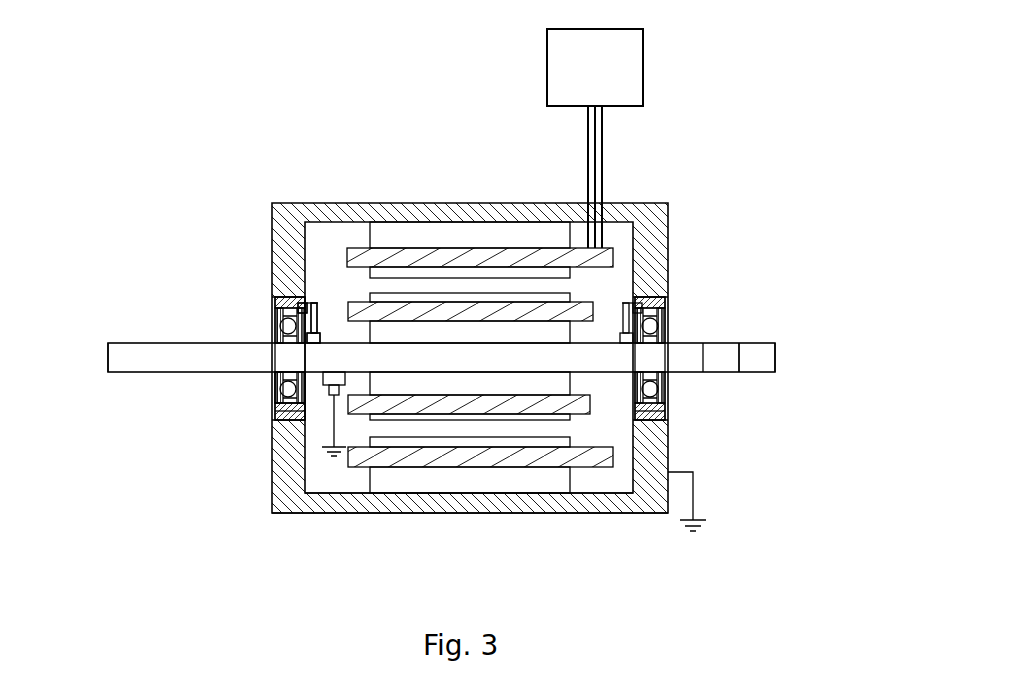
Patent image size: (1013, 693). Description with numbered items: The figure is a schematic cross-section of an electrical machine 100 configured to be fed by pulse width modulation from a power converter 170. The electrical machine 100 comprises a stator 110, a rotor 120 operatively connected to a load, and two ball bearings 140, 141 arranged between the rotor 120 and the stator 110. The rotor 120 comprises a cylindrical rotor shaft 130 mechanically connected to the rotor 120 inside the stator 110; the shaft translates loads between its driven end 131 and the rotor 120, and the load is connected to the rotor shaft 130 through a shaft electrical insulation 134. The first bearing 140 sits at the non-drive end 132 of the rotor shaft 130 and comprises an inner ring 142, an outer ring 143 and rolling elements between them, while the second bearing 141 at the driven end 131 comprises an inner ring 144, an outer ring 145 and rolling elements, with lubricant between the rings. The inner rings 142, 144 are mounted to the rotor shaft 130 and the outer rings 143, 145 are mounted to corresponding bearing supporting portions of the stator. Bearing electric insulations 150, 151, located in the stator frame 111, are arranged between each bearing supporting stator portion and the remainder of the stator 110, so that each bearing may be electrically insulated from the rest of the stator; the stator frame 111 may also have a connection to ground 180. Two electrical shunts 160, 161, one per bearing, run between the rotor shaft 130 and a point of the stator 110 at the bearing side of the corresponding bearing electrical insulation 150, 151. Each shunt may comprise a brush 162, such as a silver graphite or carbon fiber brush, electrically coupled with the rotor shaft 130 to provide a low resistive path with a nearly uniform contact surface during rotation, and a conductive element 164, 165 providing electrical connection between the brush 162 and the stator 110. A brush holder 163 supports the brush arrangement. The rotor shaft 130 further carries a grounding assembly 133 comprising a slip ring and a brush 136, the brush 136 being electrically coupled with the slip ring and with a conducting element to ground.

The electrical machine 100 is at (217, 135).
The stator 110 is at (405, 490).
The stator frame 111 is at (517, 503).
The rotor 120 is at (535, 385).
The rotor shaft 130 is at (142, 358).
The driven end 131 is at (783, 358).
The non-drive end 132 is at (108, 360).
The grounding assembly 133 is at (322, 380).
The shaft electrical insulation 134 is at (715, 365).
The brush 136 is at (312, 392).
The first bearing 140 is at (150, 328).
The second bearing 141 is at (778, 325).
The inner ring 142 is at (272, 340).
The outer ring 143 is at (272, 320).
The inner ring 144 is at (668, 340).
The outer ring 145 is at (668, 318).
The bearing electric insulation 150 is at (272, 300).
The bearing electric insulation 151 is at (668, 300).
The electrical shunt 160 is at (326, 304).
The electrical shunt 161 is at (628, 294).
The brush 162 is at (275, 377).
The brush holder 163 is at (300, 297).
The conductive element 164 is at (620, 333).
The conductive element 165 is at (322, 315).
The power converter 170 is at (645, 60).
The connection to ground 180 is at (694, 493).